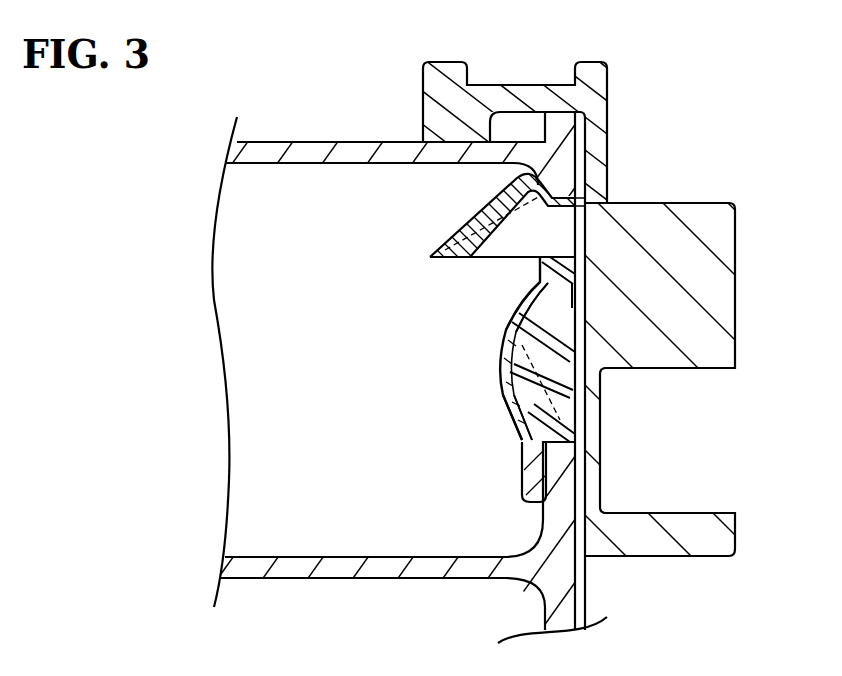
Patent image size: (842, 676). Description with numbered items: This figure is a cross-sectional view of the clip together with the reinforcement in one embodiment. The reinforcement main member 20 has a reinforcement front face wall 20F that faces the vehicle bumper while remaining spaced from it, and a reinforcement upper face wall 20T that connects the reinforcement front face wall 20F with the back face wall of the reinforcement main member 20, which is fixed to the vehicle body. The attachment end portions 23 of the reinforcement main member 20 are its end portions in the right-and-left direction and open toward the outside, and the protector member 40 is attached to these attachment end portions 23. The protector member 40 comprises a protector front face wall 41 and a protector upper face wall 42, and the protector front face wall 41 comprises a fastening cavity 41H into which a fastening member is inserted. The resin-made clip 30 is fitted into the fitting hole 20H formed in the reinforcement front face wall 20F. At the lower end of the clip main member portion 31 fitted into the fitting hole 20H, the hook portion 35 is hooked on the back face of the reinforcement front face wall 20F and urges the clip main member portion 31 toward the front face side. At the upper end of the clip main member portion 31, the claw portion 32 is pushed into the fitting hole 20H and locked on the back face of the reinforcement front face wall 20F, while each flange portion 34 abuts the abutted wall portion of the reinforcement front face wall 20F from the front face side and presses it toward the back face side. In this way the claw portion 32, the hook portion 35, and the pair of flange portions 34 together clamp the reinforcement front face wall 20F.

The reinforcement main member 20 is at (333, 578).
The reinforcement upper face wall 20T is at (281, 142).
The reinforcement front face wall 20F is at (577, 583).
The fitting hole 20H is at (582, 213).
The attachment end portion 23 is at (314, 368).
The resin-made clip 30 is at (498, 353).
The clip main member portion 31 is at (522, 392).
The claw portion 32 is at (453, 229).
The flange portion 34 is at (540, 319).
The hook portion 35 is at (517, 468).
The protector member 40 is at (715, 82).
The protector front face wall 41 is at (737, 357).
The fastening cavity 41H is at (702, 512).
The protector upper face wall 42 is at (510, 85).